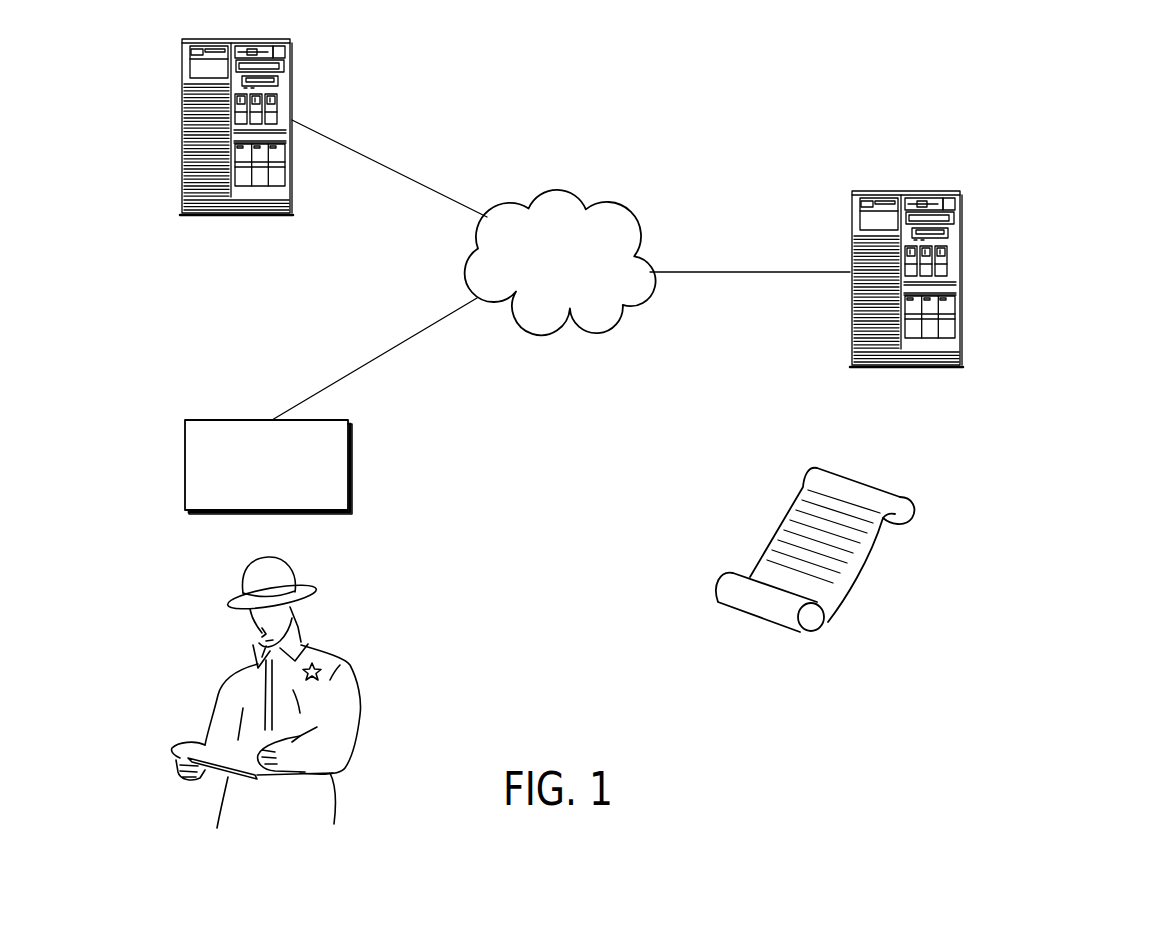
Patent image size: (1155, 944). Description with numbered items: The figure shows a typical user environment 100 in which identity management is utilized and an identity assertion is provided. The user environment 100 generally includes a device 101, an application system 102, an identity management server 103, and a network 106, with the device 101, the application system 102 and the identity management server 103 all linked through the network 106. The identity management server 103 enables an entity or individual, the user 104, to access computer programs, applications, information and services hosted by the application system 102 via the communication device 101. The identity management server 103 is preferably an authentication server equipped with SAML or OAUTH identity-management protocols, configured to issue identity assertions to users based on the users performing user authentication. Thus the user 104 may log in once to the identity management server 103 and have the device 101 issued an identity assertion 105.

The user environment 100 is at (1130, 101).
The device 101 is at (348, 470).
The application system 102 is at (962, 272).
The identity management server 103 is at (180, 120).
The user 104 is at (360, 712).
The identity assertion 105 is at (857, 558).
The network 106 is at (557, 197).